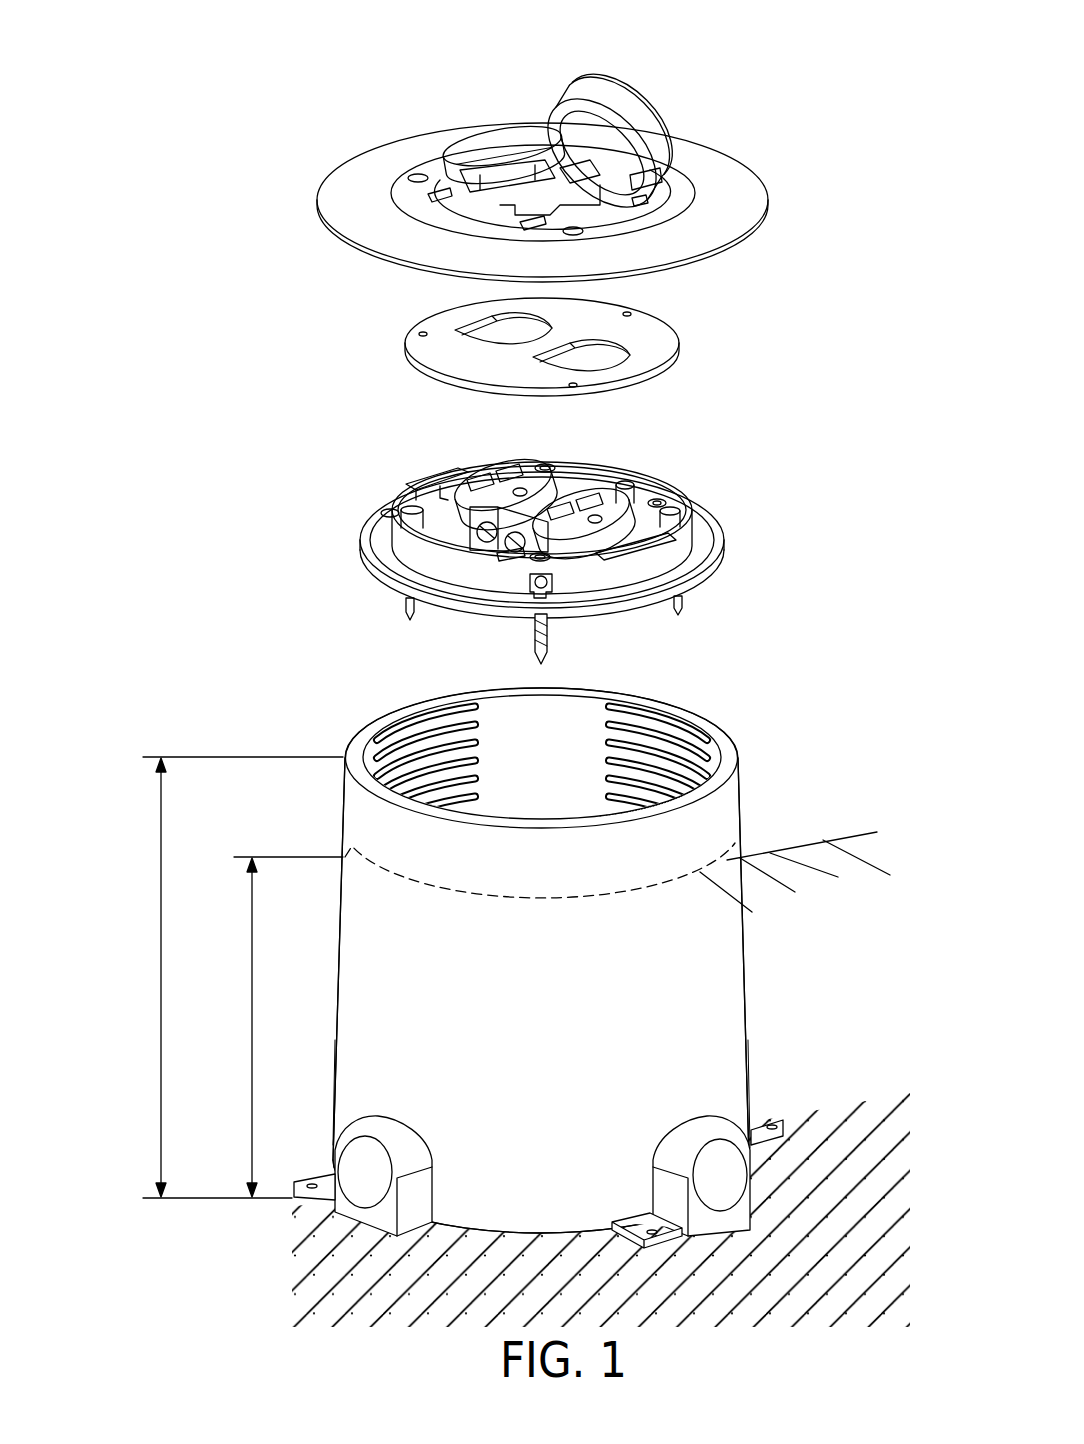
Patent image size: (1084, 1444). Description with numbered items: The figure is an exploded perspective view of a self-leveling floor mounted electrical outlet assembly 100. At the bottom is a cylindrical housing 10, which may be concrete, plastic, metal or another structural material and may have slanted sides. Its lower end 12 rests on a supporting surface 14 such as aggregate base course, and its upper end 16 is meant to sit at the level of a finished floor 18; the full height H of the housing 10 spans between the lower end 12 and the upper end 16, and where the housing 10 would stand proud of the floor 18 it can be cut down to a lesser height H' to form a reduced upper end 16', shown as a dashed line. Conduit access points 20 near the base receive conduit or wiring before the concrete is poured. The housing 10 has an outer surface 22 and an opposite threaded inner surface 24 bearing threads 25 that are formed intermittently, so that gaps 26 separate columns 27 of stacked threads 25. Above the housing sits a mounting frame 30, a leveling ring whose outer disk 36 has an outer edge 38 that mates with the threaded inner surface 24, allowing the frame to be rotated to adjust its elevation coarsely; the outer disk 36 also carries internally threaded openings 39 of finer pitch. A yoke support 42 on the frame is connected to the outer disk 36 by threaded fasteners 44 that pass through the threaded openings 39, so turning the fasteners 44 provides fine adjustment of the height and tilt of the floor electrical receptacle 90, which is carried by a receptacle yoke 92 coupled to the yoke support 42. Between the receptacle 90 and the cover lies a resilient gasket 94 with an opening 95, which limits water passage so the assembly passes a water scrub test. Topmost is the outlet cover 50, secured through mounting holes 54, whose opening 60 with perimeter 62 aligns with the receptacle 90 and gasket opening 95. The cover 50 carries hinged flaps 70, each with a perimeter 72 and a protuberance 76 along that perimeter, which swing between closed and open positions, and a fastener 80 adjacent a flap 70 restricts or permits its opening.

The self-leveling floor mounted electrical outlet assembly 100 is at (232, 88).
The cylindrical housing 10 is at (578, 978).
The lower end 12 is at (540, 1240).
The supporting surface 14 is at (239, 1278).
The upper end 16 is at (567, 758).
The reduced upper end 16' is at (581, 844).
The finished floor 18 is at (830, 838).
The conduit access points 20 is at (362, 1160).
The outer surface 22 is at (402, 861).
The threaded inner surface 24 is at (527, 783).
The threads 25 is at (470, 780).
The gaps 26 is at (605, 732).
The columns 27 is at (472, 689).
The mounting frame 30 is at (527, 534).
The outer disk 36 is at (712, 540).
The outer edge 38 is at (720, 572).
The threaded opening 39 is at (530, 586).
The yoke support 42 is at (672, 548).
The threaded fastener 44 is at (697, 600).
The outlet cover 50 is at (522, 157).
The mounting holes 54 is at (418, 174).
The opening 60 is at (532, 218).
The perimeter 62 is at (633, 230).
The hinged flap 70 is at (664, 75).
The perimeter 72 is at (572, 92).
The protuberance 76 is at (449, 134).
The fastener 80 is at (440, 198).
The floor electrical receptacle 90 is at (572, 500).
The receptacle yoke 92 is at (450, 494).
The gasket 94 is at (591, 347).
The opening 95 is at (569, 375).
The height H is at (217, 977).
The lesser height H' is at (266, 1027).